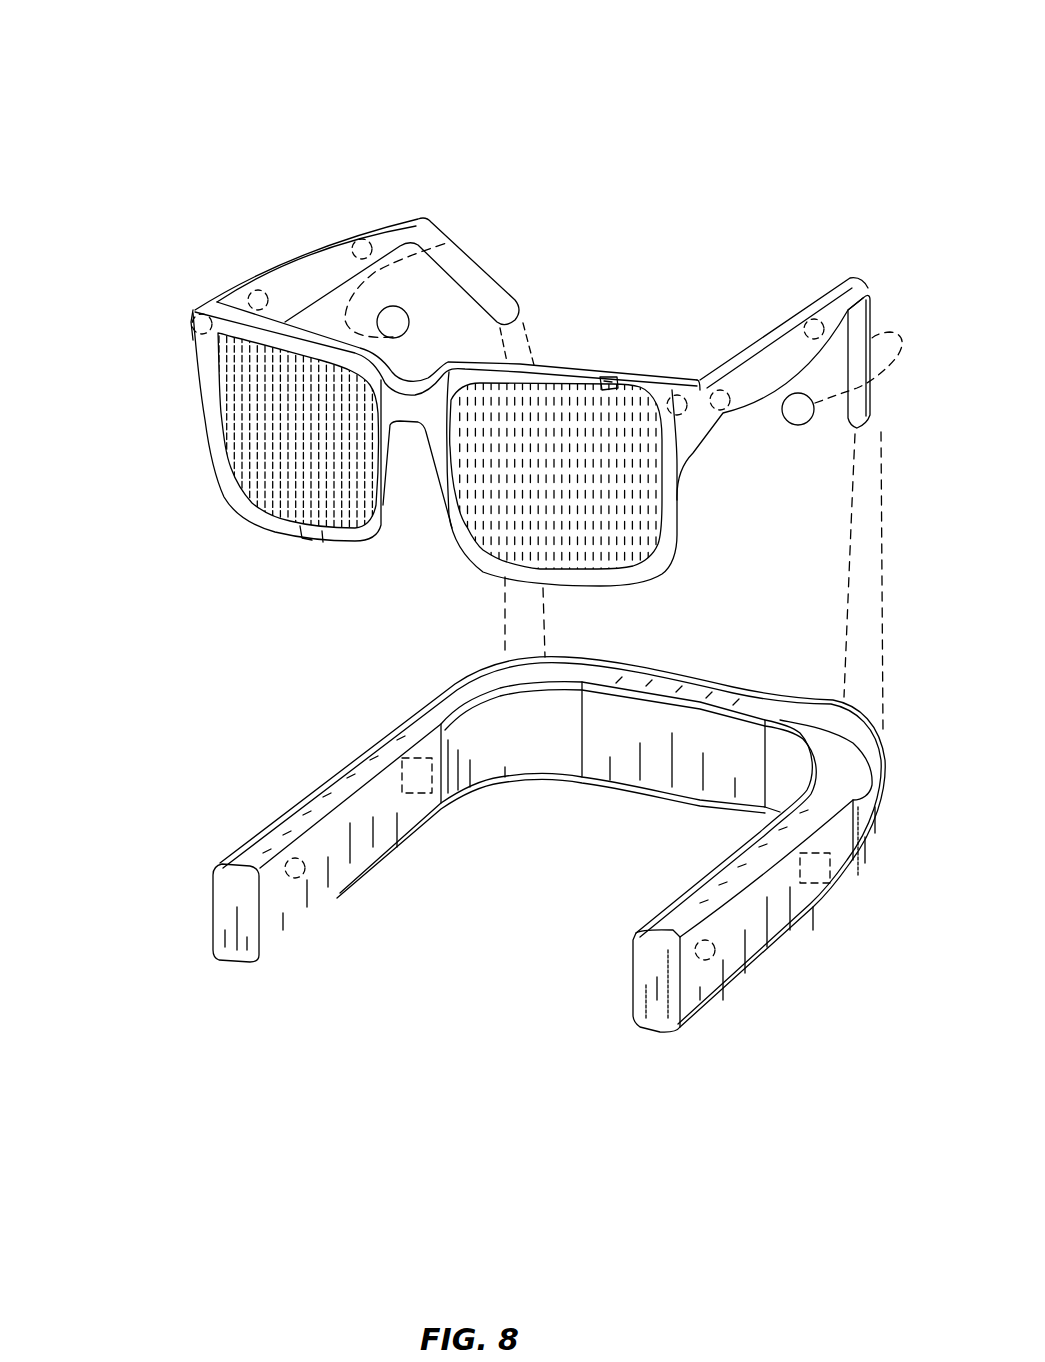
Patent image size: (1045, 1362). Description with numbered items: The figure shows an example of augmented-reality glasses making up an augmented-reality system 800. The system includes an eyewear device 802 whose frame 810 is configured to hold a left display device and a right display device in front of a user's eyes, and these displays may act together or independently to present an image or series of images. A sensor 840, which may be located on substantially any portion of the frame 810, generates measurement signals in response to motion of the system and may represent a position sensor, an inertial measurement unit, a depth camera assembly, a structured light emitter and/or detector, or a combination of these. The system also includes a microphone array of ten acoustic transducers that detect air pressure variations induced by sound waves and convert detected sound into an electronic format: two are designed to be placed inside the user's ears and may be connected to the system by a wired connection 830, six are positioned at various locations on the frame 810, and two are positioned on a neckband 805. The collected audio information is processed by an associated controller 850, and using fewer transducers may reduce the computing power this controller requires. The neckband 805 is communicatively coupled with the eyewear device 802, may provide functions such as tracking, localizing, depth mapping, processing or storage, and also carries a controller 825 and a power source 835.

The augmented-reality system 800 is at (113, 105).
The eyewear device 802 is at (415, 222).
The neckband 805 is at (213, 963).
The frame 810 is at (417, 231).
The controller 825 is at (820, 876).
The wired connection 830 is at (870, 597).
The power source 835 is at (425, 783).
The sensor 840 is at (303, 533).
The controller 850 is at (602, 374).